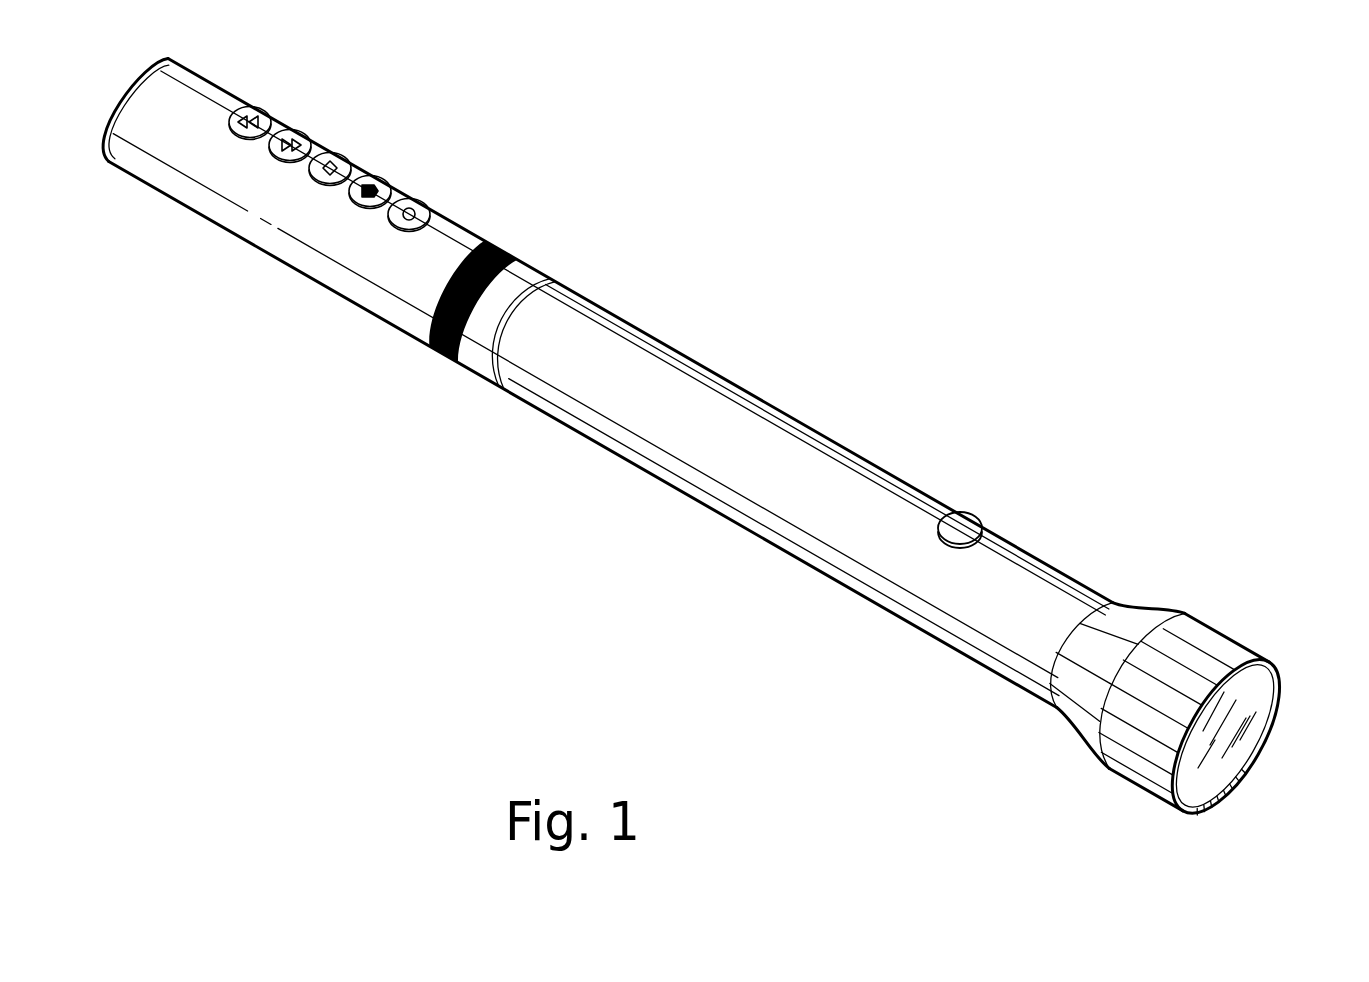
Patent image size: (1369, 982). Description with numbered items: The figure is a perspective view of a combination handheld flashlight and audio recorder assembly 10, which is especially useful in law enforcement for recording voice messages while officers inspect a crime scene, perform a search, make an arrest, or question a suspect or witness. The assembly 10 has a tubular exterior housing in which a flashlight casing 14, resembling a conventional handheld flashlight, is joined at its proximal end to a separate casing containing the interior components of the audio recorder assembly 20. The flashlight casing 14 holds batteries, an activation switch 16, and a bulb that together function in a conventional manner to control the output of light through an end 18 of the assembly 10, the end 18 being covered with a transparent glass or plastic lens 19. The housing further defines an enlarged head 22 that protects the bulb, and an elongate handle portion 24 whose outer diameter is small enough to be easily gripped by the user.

The combination handheld flashlight and audio recorder assembly 10 is at (755, 328).
The flashlight casing 14 is at (815, 428).
The activation switch 16 is at (942, 515).
The end 18 is at (1242, 798).
The lens 19 is at (1226, 763).
The audio recorder assembly 20 is at (358, 378).
The enlarged head 22 is at (1140, 755).
The handle portion 24 is at (836, 612).